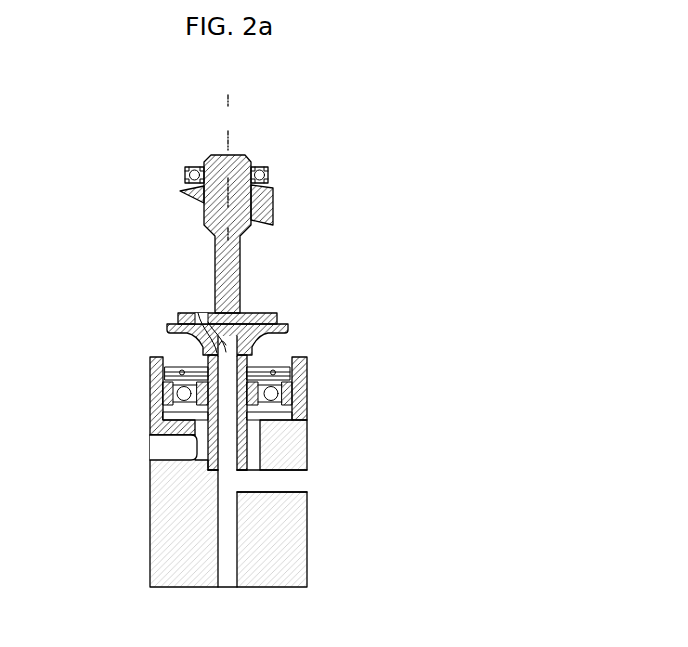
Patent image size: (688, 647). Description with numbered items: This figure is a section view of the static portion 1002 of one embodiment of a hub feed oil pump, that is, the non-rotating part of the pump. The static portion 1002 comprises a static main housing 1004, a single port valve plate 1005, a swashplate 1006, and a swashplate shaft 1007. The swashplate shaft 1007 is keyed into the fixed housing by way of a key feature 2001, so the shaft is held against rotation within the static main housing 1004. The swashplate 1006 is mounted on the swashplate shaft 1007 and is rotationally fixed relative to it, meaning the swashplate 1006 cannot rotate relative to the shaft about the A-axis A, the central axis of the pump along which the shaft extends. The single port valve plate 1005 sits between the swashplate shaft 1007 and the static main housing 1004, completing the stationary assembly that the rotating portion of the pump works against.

The static portion 1002 is at (495, 190).
The static main housing 1004 is at (150, 532).
The single port valve plate 1005 is at (278, 318).
The swashplate 1006 is at (180, 191).
The swashplate shaft 1007 is at (215, 282).
The key feature 2001 is at (248, 326).
The A-axis A is at (233, 150).